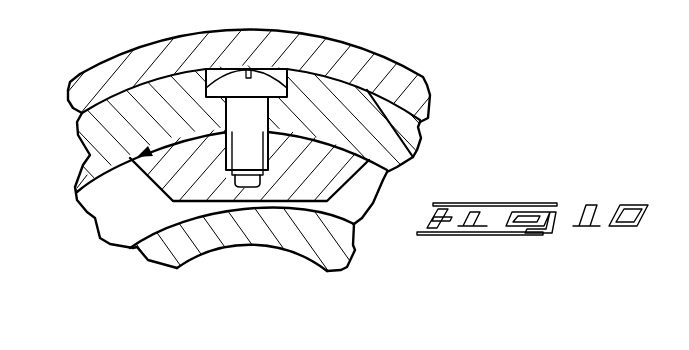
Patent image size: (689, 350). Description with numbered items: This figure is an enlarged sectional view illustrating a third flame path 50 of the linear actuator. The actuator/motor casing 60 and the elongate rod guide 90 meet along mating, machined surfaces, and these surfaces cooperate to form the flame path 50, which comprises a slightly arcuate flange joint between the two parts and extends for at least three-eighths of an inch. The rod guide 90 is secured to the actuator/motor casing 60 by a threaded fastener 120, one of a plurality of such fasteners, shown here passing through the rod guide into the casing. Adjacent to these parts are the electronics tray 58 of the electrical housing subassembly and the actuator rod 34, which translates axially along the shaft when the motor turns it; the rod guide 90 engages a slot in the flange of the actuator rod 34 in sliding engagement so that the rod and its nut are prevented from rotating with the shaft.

The actuator rod 34 is at (242, 240).
The flame path 50 is at (165, 144).
The electronics tray 58 is at (382, 55).
The actuator/motor casing 60 is at (393, 135).
The rod guide 90 is at (178, 182).
The threaded fastener 120 is at (265, 80).